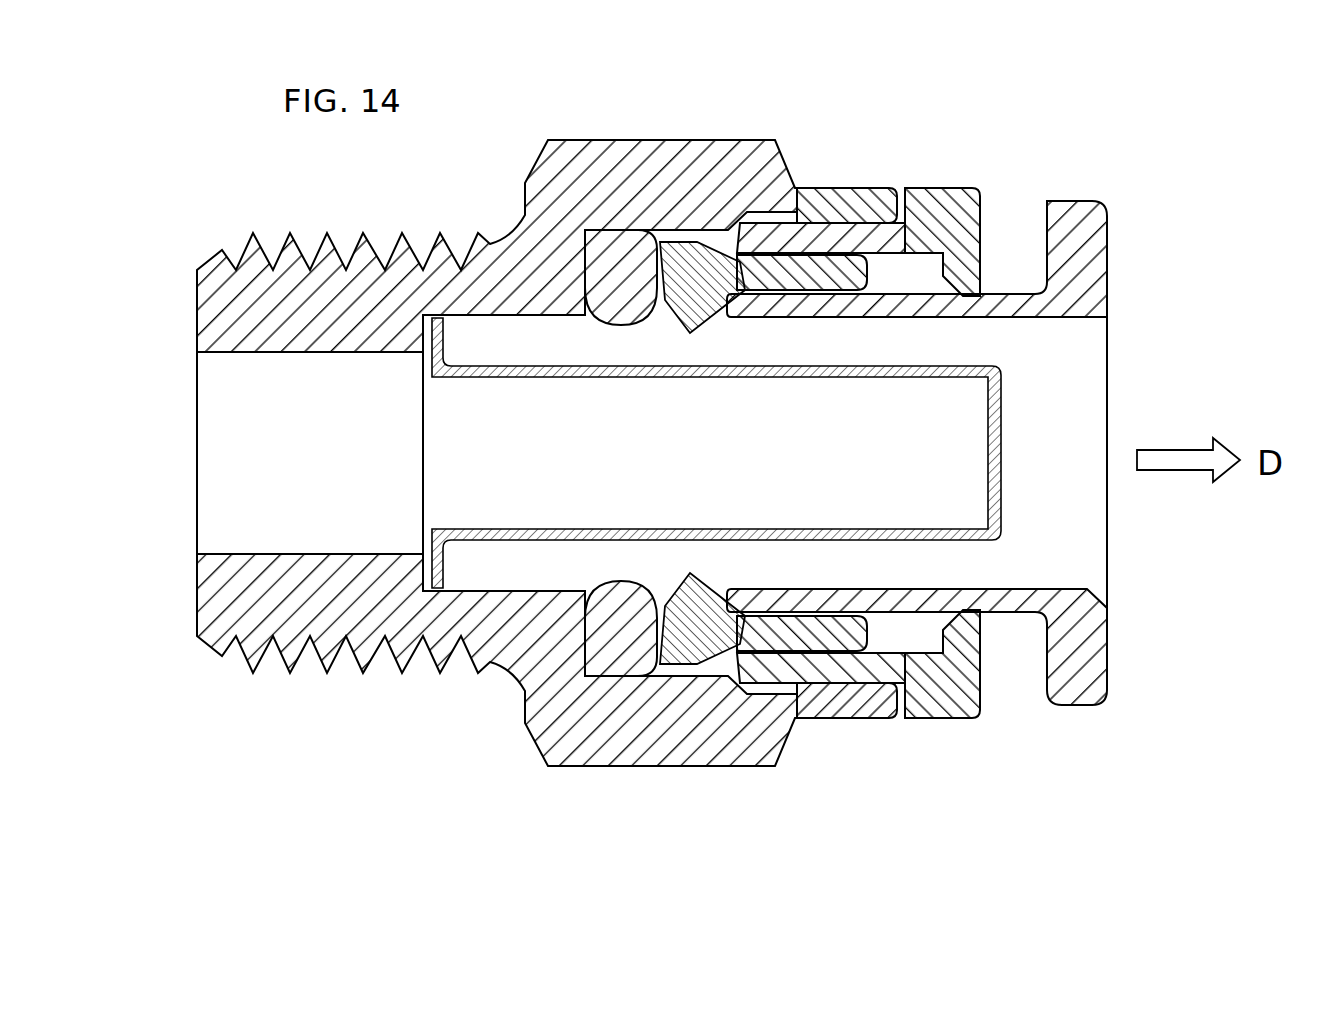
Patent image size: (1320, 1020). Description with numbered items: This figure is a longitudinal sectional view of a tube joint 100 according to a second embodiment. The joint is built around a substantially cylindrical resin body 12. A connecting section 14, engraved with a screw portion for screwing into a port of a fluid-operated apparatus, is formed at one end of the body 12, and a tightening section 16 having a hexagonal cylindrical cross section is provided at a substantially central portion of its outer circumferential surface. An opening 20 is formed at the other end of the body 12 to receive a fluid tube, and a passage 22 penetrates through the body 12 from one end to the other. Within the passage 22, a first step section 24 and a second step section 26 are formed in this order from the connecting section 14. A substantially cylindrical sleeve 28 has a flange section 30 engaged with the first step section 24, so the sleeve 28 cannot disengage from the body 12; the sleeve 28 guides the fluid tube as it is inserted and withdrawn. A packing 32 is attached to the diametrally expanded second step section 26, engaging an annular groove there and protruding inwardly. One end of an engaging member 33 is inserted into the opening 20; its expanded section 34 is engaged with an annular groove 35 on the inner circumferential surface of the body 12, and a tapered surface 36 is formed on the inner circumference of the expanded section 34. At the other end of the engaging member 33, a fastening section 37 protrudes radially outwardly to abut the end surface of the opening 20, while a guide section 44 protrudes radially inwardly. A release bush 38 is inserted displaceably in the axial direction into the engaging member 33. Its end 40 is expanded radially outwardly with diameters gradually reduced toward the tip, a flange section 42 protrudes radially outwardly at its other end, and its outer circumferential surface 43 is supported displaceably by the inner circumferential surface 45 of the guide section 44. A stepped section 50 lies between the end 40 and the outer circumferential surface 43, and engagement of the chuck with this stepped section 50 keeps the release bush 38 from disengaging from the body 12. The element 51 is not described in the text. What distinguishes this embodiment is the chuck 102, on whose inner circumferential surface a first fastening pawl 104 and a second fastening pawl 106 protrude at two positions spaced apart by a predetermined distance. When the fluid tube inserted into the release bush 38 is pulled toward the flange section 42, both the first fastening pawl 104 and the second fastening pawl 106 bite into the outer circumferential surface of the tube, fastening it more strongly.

The tube joint 100 is at (1168, 125).
The body 12 is at (786, 160).
The connecting section 14 is at (205, 597).
The tightening section 16 is at (608, 748).
The opening 20 is at (870, 700).
The passage 22 is at (240, 352).
The first step section 24 is at (492, 312).
The second step section 26 is at (682, 240).
The sleeve 28 is at (1003, 455).
The flange section 30 is at (420, 546).
The packing 32 is at (620, 328).
The engaging member 33 is at (940, 190).
The expanded section 34 is at (797, 198).
The annular groove 35 is at (746, 220).
The tapered surface 36 is at (710, 236).
The fastening section 37 is at (915, 200).
The release bush 38 is at (1108, 283).
The end 40 is at (798, 318).
The flange section 42 is at (1110, 222).
The outer circumferential surface 43 is at (900, 604).
The guide section 44 is at (975, 290).
The inner circumferential surface 45 is at (1000, 616).
The stepped section 50 is at (858, 295).
The retainer portion 51 is at (920, 665).
The chuck 102 is at (870, 276).
The first fastening pawl 104 is at (657, 318).
The second fastening pawl 106 is at (701, 322).